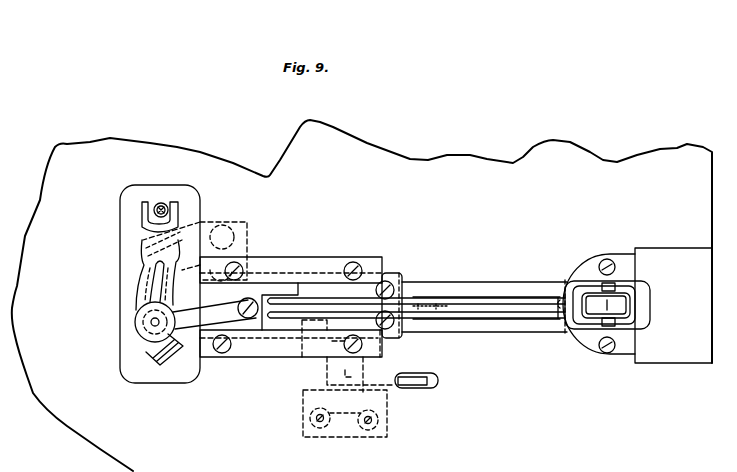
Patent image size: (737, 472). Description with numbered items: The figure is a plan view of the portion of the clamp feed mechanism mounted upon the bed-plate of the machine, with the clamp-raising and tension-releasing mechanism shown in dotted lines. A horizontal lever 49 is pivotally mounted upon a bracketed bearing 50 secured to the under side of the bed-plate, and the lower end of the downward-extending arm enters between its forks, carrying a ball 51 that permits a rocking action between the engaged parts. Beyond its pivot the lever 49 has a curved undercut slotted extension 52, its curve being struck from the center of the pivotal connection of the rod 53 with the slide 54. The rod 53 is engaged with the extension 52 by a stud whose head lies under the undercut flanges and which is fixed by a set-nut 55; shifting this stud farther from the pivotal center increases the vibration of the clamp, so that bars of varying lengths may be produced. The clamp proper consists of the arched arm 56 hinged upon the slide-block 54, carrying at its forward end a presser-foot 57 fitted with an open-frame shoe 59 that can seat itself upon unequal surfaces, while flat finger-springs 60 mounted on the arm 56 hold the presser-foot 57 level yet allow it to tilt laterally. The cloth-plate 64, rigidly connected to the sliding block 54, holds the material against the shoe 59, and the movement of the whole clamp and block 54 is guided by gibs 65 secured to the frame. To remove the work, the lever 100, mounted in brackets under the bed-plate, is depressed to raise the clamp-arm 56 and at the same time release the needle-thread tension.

The horizontal lever 49 is at (146, 236).
The bracketed bearing 50 is at (208, 235).
The ball 51 is at (161, 203).
The undercut slotted extension 52 is at (152, 356).
The rod 53 is at (182, 311).
The slide 54 is at (249, 289).
The set-nut 55 is at (135, 323).
The arm 56 is at (345, 308).
The presser-foot 57 is at (574, 295).
The shoe 59 is at (636, 291).
The flat finger-springs 60 is at (512, 296).
The cloth-plate 64 is at (478, 283).
The gibs 65 is at (299, 262).
The lever 100 is at (426, 381).